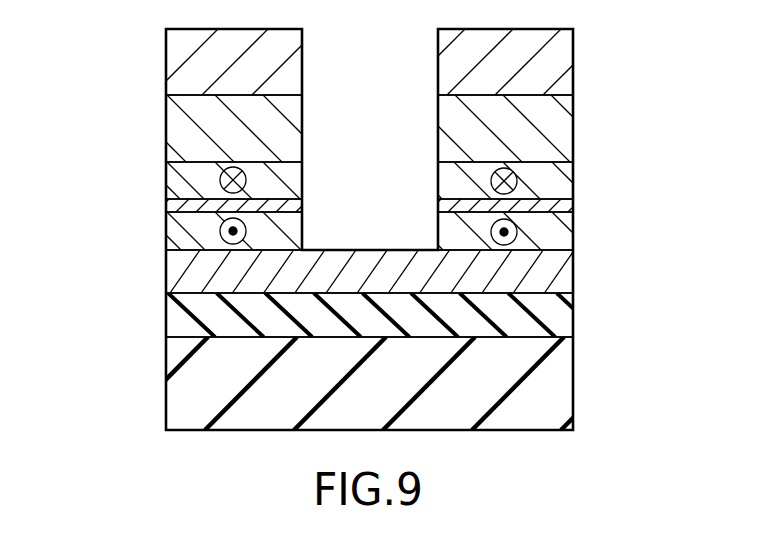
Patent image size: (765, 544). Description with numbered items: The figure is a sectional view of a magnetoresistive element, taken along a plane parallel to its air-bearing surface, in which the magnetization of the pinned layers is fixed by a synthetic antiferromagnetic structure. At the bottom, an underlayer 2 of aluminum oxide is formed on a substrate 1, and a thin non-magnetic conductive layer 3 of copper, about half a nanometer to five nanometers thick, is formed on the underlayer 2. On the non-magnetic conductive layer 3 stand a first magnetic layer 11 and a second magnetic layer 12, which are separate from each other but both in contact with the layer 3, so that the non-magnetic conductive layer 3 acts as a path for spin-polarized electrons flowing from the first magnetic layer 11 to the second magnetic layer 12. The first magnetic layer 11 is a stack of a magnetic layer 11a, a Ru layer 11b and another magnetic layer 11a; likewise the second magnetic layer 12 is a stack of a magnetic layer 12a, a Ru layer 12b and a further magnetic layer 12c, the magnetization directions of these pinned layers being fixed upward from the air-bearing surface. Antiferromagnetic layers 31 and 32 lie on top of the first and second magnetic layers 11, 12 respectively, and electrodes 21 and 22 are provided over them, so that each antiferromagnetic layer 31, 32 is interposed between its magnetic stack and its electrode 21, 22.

The substrate 1 is at (574, 382).
The underlayer 2 is at (574, 313).
The non-magnetic conductive layer 3 is at (574, 272).
The first magnetic layer 11 is at (176, 207).
The magnetic layer 11a is at (166, 176).
The Ru layer 11b is at (166, 207).
The second magnetic layer 12 is at (552, 209).
The magnetic layer 12a is at (574, 176).
The Ru layer 12b is at (574, 208).
The ferromagnetic layer 12c is at (520, 232).
The electrode 21 is at (166, 60).
The electrode 22 is at (574, 56).
The antiferromagnetic layer 31 is at (166, 124).
The antiferromagnetic layer 32 is at (574, 128).